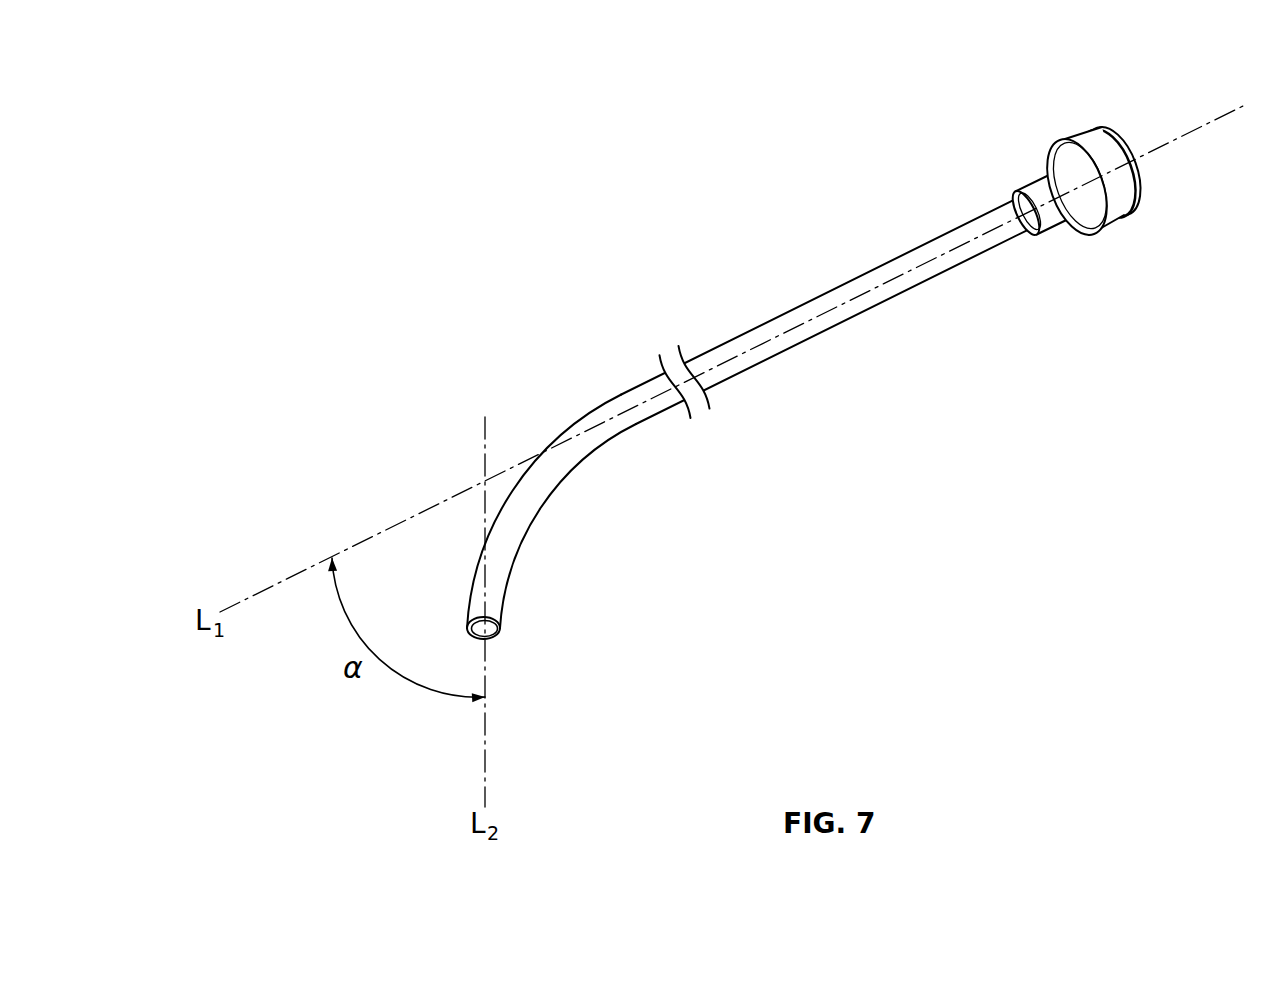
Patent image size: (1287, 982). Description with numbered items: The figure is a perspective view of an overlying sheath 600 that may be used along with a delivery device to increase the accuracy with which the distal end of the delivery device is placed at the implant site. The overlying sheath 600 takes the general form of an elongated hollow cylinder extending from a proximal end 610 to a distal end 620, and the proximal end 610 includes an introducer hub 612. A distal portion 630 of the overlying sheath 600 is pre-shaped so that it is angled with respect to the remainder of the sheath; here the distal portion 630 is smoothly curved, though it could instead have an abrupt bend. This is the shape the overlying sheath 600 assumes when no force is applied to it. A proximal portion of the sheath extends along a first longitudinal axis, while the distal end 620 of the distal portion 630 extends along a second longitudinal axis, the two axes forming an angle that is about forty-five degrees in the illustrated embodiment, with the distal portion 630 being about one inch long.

The overlying sheath 600 is at (731, 443).
The proximal end 610 is at (1028, 161).
The introducer hub 612 is at (1074, 143).
The distal end 620 is at (492, 631).
The distal portion 630 is at (494, 501).